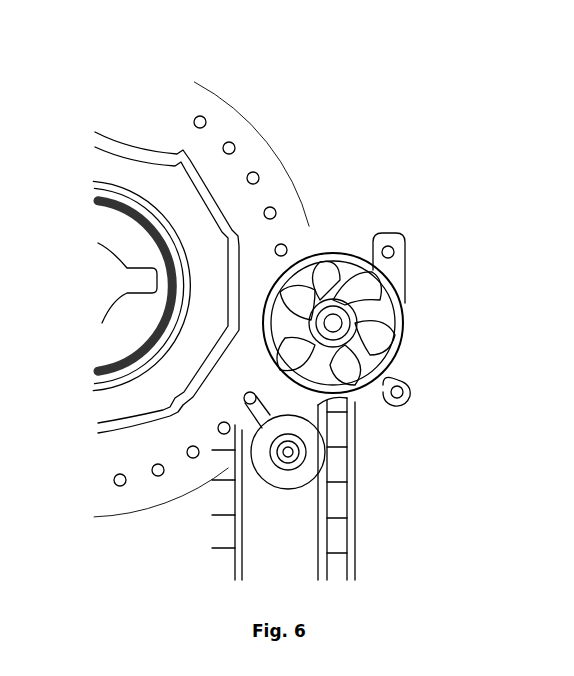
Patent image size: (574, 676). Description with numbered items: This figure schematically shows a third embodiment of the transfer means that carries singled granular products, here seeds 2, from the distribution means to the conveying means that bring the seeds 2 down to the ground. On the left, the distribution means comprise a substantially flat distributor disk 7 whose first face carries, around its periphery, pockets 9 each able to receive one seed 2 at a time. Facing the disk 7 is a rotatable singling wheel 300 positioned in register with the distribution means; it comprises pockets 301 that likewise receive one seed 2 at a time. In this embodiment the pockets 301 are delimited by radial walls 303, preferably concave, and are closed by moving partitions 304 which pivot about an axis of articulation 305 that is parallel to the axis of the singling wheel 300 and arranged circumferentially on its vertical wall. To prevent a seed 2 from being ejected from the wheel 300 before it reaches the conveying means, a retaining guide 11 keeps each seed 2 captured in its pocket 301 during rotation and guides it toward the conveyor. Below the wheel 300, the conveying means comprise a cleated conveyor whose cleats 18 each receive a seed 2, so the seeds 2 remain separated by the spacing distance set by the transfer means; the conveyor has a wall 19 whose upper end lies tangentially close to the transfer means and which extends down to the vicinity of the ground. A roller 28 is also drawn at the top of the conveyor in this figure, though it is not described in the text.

The seed 2 is at (204, 118).
The distributor disk 7 is at (264, 134).
The pocket 9 is at (115, 475).
The retaining guide 11 is at (260, 298).
The cleat 18 is at (337, 558).
The wall 19 is at (353, 415).
The roller 28 is at (263, 468).
The singling wheel 300 is at (420, 240).
The pocket 301 is at (377, 348).
The radial wall 303 is at (310, 287).
The moving partition 304 is at (397, 303).
The axis of articulation 305 is at (350, 263).